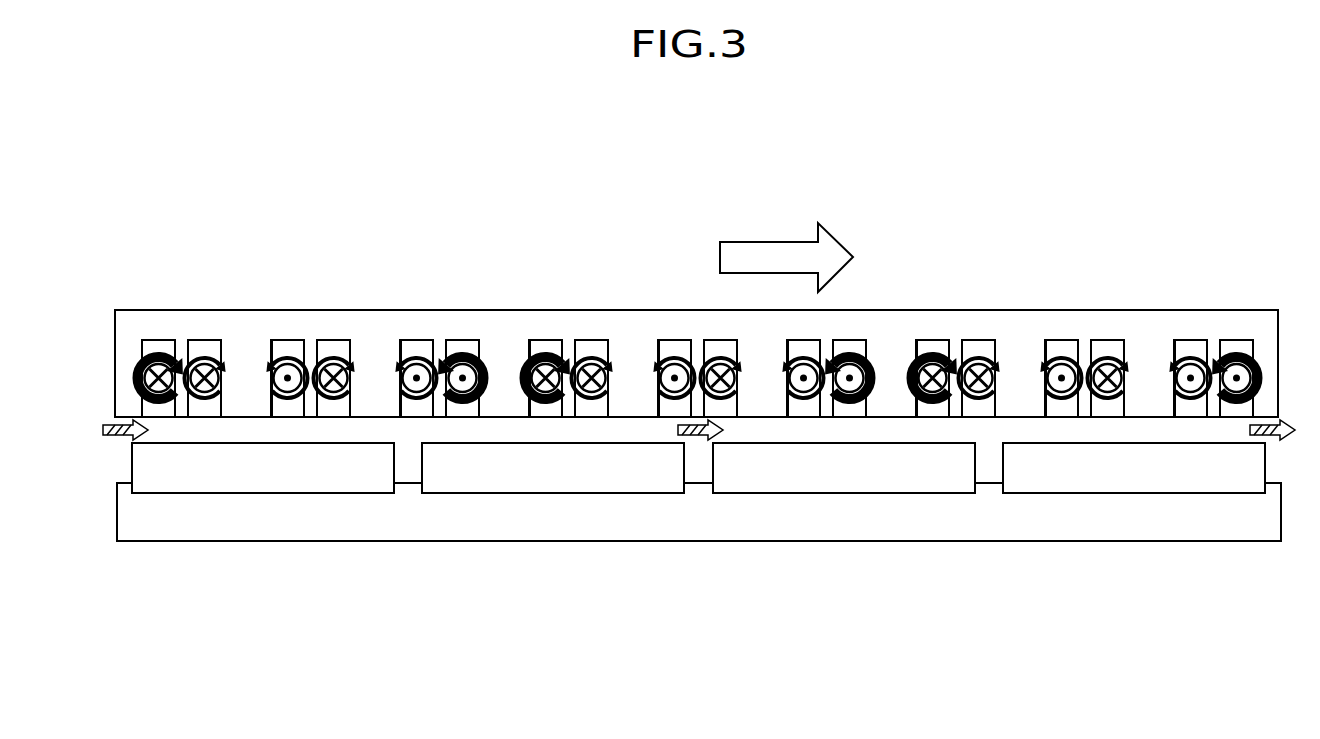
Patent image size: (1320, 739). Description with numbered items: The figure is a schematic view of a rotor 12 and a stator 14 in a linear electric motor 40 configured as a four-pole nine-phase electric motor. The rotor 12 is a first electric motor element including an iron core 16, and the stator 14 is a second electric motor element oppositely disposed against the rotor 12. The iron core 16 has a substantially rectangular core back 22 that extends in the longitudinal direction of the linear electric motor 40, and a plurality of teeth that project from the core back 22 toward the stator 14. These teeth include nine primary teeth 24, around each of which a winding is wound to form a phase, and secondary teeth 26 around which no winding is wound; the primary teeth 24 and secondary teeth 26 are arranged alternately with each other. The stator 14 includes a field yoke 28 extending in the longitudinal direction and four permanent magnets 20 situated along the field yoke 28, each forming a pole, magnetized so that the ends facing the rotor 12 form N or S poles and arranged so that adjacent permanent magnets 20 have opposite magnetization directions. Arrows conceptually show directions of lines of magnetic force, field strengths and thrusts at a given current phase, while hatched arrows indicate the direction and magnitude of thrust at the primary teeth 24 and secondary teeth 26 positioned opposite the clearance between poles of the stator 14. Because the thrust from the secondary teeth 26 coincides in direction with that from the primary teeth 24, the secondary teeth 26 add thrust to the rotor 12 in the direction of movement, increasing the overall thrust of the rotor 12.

The linear electric motor 40 is at (140, 123).
The rotor 12 is at (412, 283).
The stator 14 is at (348, 556).
The iron core 16 is at (1248, 310).
The permanent magnet 20 is at (272, 493).
The core back 22 is at (680, 315).
The primary tooth 24 is at (243, 345).
The secondary tooth 26 is at (178, 345).
The field yoke 28 is at (485, 541).